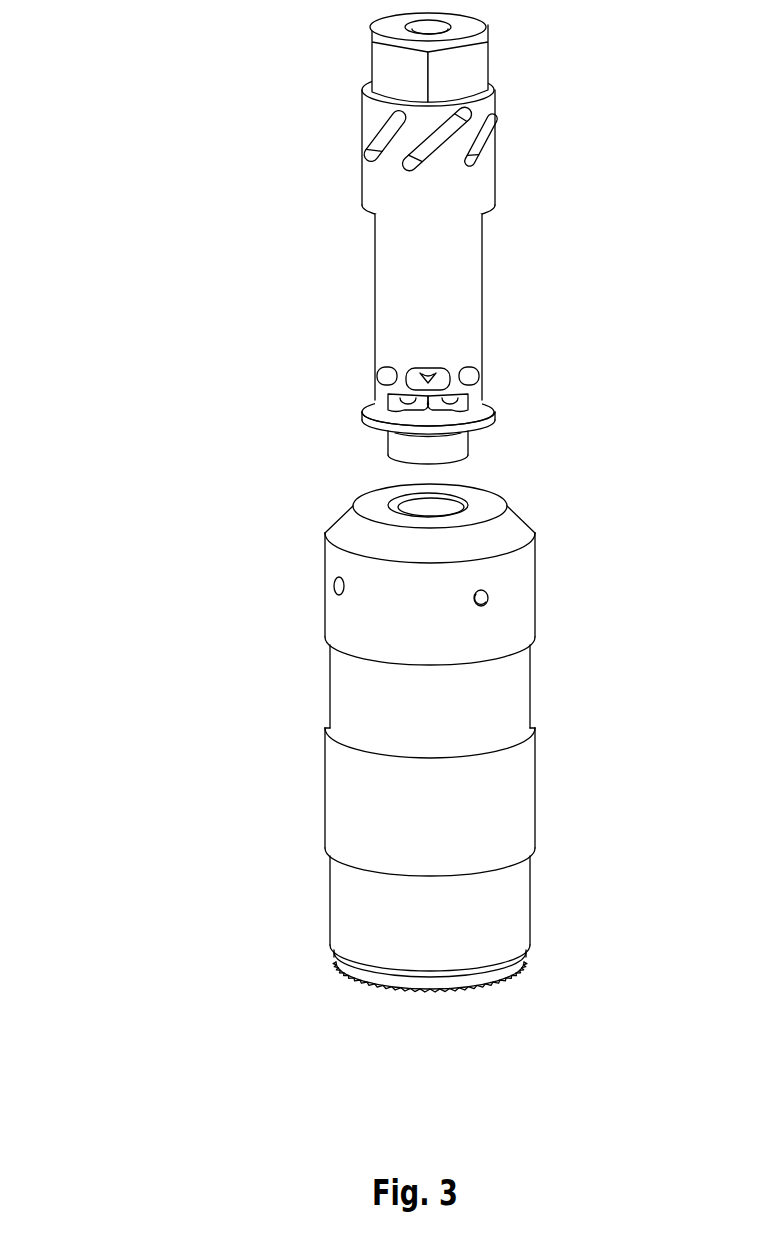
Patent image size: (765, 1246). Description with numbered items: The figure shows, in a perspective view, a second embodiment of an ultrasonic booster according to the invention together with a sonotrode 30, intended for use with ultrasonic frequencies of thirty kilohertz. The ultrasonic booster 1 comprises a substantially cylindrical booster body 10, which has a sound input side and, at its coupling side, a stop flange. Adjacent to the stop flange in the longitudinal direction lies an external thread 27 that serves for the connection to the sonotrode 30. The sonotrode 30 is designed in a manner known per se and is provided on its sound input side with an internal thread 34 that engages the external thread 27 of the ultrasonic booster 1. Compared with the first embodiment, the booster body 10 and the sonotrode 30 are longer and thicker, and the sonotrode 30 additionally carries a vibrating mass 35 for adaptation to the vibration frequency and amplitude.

The ultrasonic booster 1 is at (228, 252).
The booster body 10 is at (400, 257).
The thread 27 is at (403, 440).
The sonotrode 30 is at (327, 665).
The internal thread 34 is at (438, 513).
The additional vibrating mass 35 is at (347, 805).